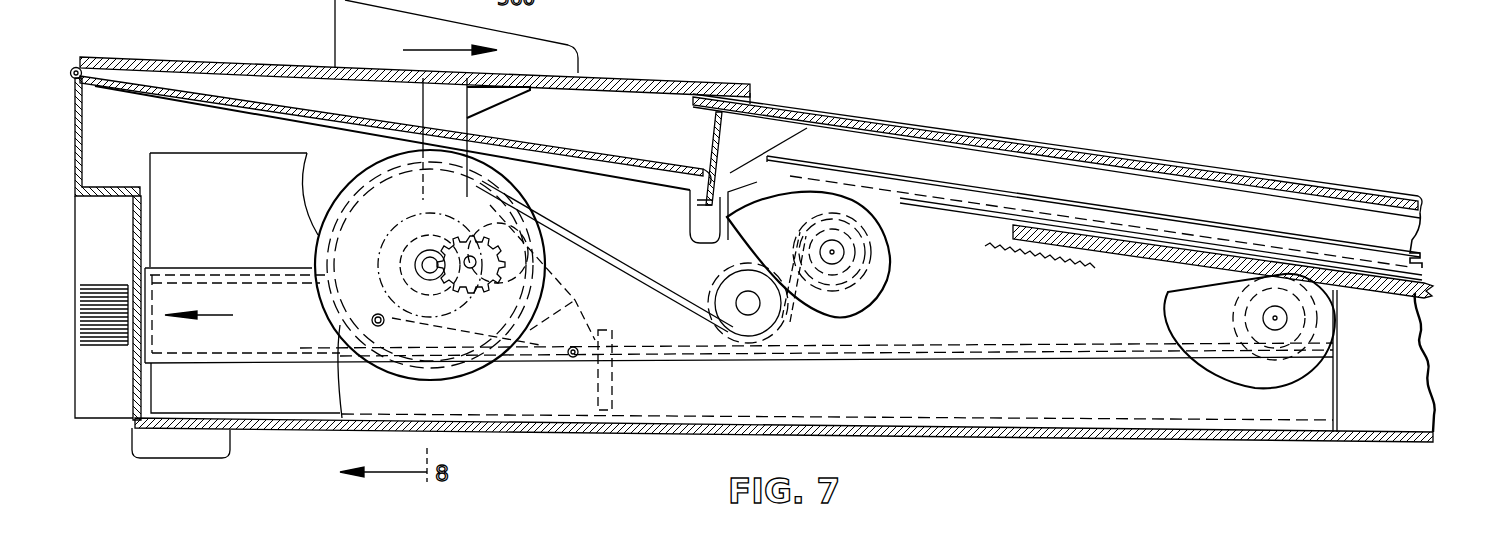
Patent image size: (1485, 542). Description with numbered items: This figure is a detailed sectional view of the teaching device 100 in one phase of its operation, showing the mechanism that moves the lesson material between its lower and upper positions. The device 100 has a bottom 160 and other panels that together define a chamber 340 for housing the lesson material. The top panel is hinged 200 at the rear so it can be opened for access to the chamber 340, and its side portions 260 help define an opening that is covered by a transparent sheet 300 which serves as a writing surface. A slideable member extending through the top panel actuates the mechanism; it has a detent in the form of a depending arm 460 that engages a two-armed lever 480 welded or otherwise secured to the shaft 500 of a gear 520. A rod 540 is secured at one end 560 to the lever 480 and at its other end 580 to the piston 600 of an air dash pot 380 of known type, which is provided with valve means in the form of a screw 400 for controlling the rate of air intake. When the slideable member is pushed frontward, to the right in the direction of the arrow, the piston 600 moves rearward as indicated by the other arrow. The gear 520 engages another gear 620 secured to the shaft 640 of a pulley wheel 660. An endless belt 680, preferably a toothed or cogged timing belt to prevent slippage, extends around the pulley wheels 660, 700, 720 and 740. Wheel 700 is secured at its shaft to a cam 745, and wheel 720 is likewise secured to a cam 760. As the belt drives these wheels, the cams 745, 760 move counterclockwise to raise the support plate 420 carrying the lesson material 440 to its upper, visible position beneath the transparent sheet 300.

The device 100 is at (268, 52).
The bottom 160 is at (940, 440).
The hinge 200 is at (80, 66).
The side portions 260 is at (935, 122).
The transparent sheet 300 is at (1065, 140).
The chamber 340 is at (1090, 322).
The air dash pot 380 is at (160, 268).
The screw 400 is at (100, 290).
The support plate 420 is at (976, 197).
The lesson material 440 is at (1128, 232).
The depending arm 460 is at (428, 108).
The two-armed lever 480 is at (548, 300).
The shaft 500 is at (512, 212).
The gear 520 is at (470, 286).
The rod 540 is at (470, 360).
The one end 560 is at (568, 366).
The other end 580 is at (380, 358).
The piston 600 is at (312, 300).
The gear 620 is at (430, 222).
The shaft 640 is at (416, 260).
The pulley wheel 660 is at (320, 232).
The endless belt 680 is at (587, 246).
The wheel 700 is at (1310, 262).
The wheel 720 is at (850, 226).
The pulley wheel 740 is at (714, 280).
The cam 745 is at (1188, 300).
The cam 760 is at (870, 268).